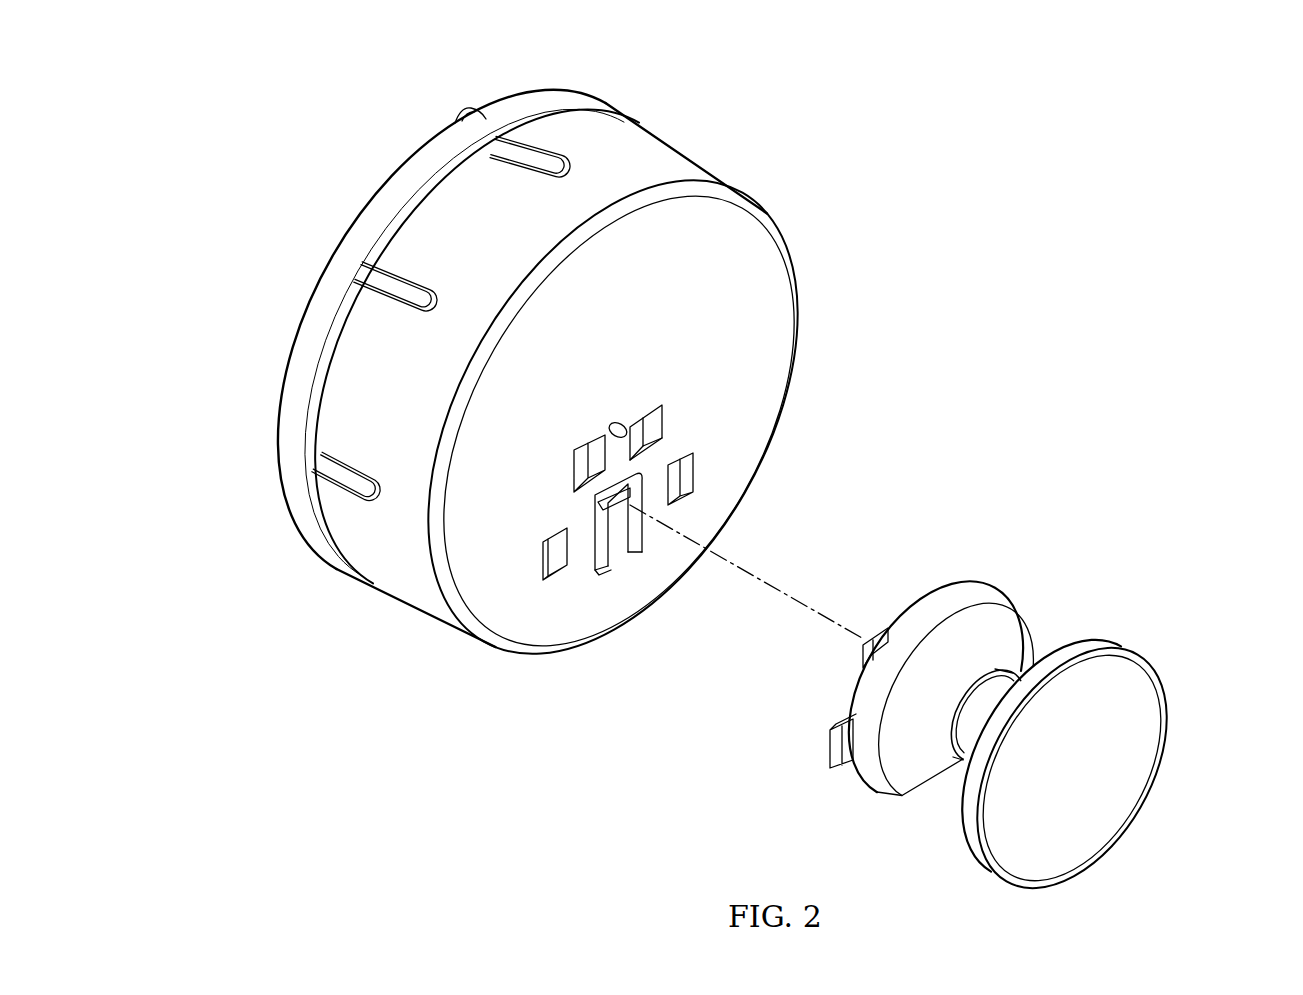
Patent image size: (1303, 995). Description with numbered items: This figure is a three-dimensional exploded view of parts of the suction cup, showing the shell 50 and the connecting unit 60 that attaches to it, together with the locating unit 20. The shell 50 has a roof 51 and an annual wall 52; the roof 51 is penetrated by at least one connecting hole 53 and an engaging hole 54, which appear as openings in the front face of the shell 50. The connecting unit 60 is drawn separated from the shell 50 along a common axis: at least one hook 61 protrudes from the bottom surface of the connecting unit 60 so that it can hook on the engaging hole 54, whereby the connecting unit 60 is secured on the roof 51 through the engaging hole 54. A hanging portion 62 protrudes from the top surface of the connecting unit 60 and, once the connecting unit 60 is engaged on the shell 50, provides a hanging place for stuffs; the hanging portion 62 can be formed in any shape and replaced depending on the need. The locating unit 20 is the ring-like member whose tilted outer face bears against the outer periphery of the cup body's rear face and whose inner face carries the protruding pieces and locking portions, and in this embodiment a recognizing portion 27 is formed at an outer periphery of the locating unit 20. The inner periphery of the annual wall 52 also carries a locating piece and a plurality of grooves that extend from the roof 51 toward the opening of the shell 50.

The locating unit 20 is at (292, 373).
The recognizing portion 27 is at (466, 120).
The shell 50 is at (660, 608).
The roof 51 is at (754, 287).
The annual wall 52 is at (642, 157).
The connecting hole 53 is at (641, 428).
The engaging hole 54 is at (598, 512).
The connecting unit 60 is at (950, 575).
The hook 61 is at (843, 749).
The hanging portion 62 is at (1142, 776).